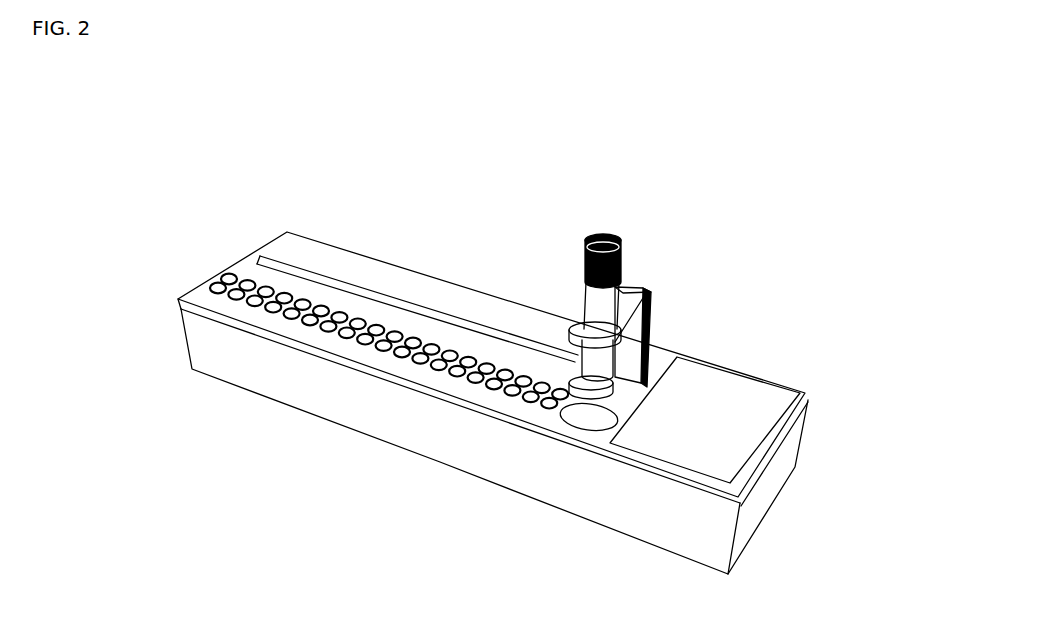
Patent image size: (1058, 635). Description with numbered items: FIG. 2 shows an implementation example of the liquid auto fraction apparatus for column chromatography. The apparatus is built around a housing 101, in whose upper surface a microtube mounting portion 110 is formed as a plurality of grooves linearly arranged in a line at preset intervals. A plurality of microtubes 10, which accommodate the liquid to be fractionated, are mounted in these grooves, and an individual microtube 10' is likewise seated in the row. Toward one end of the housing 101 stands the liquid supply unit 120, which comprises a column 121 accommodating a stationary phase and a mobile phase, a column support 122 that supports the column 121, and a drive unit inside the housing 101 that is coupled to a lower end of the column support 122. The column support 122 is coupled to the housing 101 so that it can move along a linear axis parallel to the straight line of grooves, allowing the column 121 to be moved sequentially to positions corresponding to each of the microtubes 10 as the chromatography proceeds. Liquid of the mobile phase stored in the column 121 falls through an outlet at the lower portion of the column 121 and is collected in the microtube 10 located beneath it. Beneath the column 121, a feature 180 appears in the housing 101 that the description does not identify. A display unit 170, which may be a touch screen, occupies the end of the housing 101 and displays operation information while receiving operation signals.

The microtube 10 is at (342, 319).
The sample container 10' is at (250, 213).
The housing 101 is at (322, 244).
The microtube mounting portion 110 is at (185, 342).
The liquid supply unit 120 is at (654, 290).
The column 121 is at (585, 275).
The column support 122 is at (650, 327).
The display unit 170 is at (778, 402).
The opening 180 is at (560, 418).